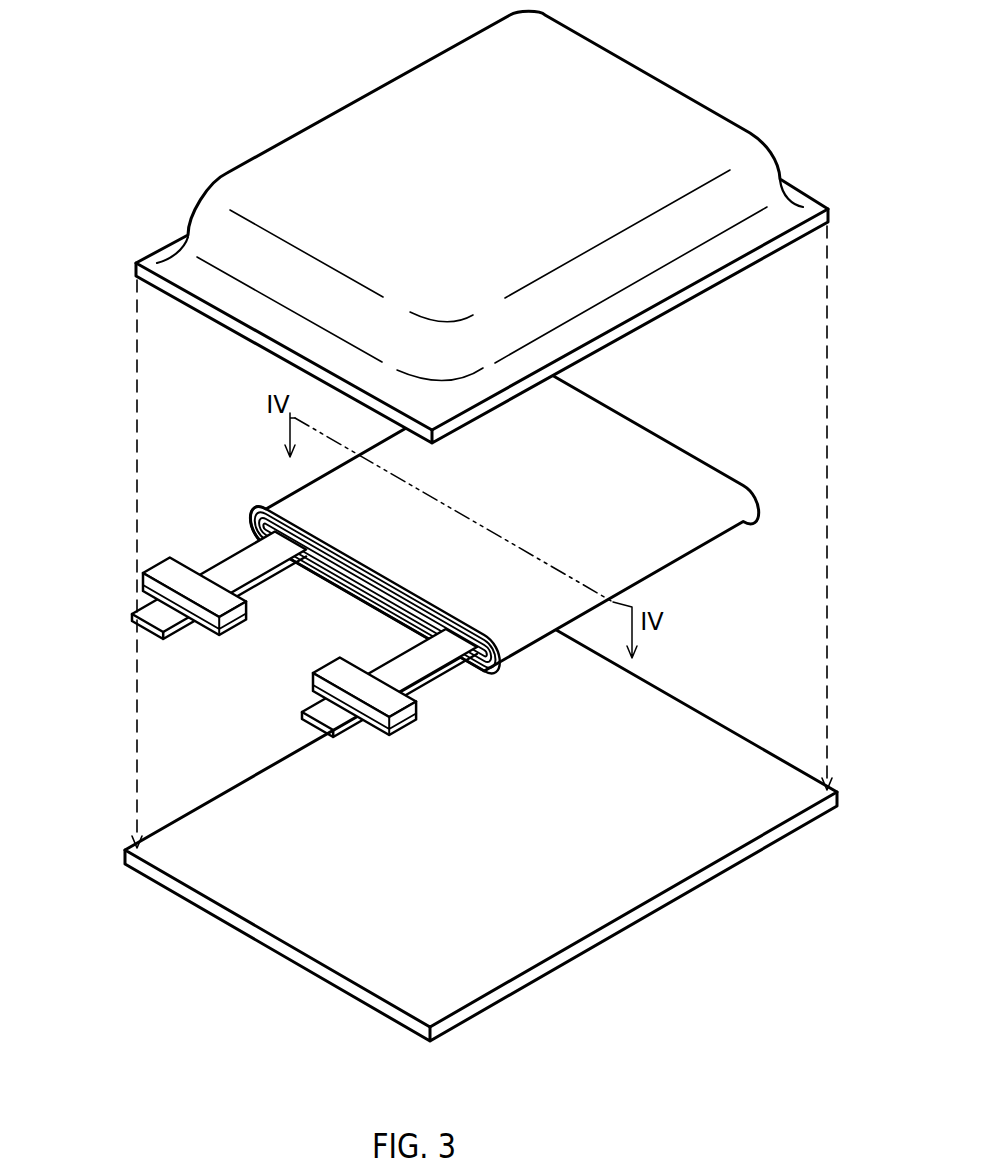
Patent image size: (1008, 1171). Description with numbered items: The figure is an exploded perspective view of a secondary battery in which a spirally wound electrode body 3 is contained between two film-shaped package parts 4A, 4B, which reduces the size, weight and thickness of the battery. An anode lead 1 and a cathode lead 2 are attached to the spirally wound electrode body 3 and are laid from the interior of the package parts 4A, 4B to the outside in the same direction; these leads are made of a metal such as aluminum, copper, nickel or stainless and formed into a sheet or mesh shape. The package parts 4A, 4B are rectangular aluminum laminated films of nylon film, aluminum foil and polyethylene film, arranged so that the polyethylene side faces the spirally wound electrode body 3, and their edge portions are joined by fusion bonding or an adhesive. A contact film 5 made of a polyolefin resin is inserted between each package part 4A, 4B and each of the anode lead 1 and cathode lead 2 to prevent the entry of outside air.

The anode lead 1 is at (315, 711).
The cathode lead 2 is at (145, 613).
The spirally wound electrode body 3 is at (592, 419).
The package part 4A is at (635, 90).
The package part 4B is at (700, 735).
The contact film 5 is at (239, 628).